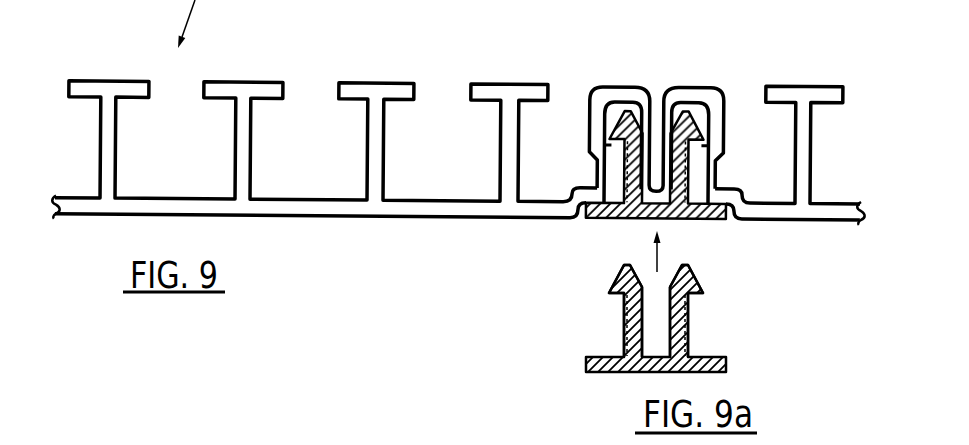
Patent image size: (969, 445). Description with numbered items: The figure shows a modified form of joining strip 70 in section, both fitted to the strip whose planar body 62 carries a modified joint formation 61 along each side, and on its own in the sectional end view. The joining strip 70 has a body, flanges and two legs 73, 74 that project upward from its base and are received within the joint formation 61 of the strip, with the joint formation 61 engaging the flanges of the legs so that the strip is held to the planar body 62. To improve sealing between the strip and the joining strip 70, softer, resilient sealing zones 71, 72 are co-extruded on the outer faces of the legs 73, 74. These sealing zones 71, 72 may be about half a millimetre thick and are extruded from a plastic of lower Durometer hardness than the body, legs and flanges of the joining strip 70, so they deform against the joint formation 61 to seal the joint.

In FIG. 9, the joint formation 61 is at (707, 62).
In FIG. 9, the planar body 62 is at (435, 216).
In FIG. 9, the joining strip 70 is at (597, 236).
In FIG. 9A, the joining strip 70 is at (594, 399).
In FIG. 9A, the sealing zone 71 is at (623, 333).
In FIG. 9A, the sealing zone 72 is at (693, 320).
In FIG. 9A, the leg 73 is at (625, 308).
In FIG. 9A, the leg 74 is at (703, 293).